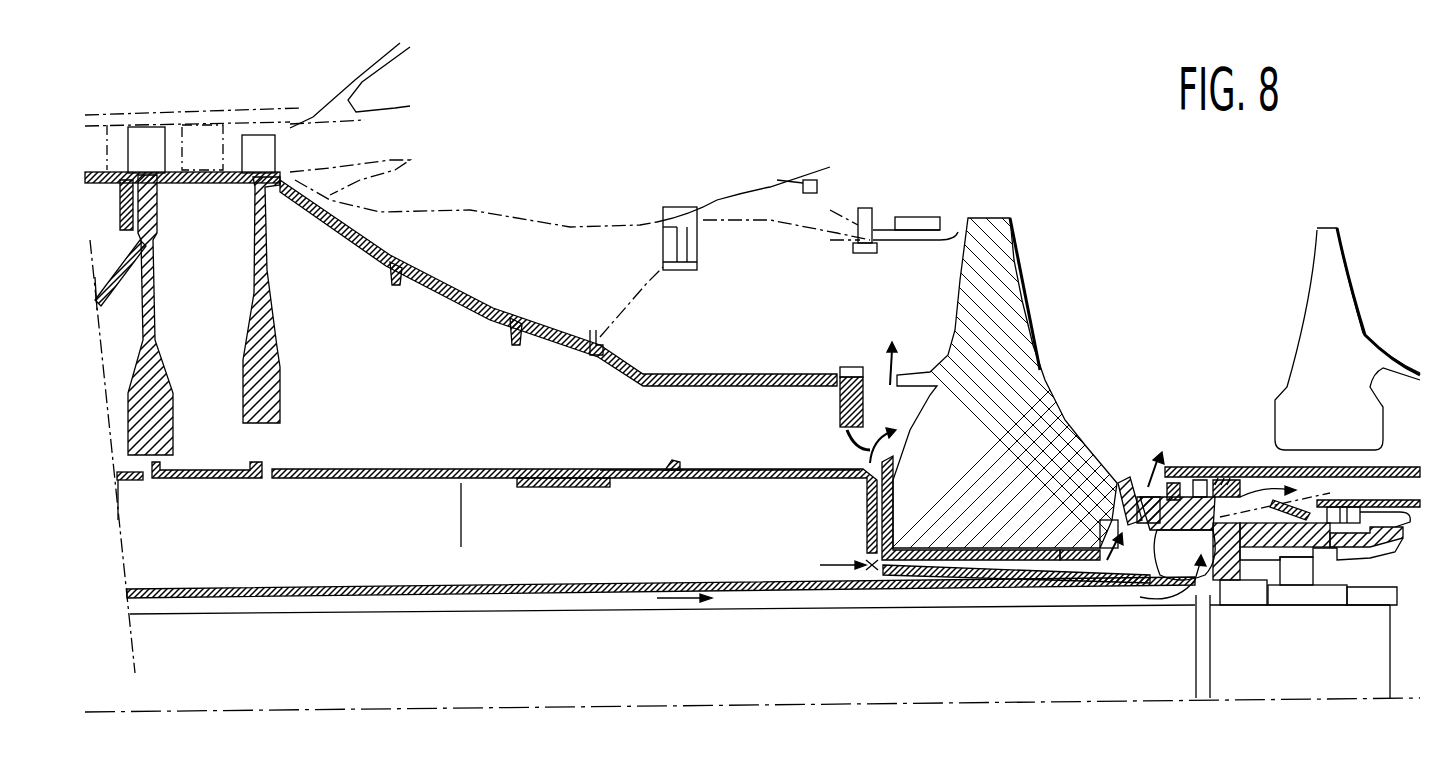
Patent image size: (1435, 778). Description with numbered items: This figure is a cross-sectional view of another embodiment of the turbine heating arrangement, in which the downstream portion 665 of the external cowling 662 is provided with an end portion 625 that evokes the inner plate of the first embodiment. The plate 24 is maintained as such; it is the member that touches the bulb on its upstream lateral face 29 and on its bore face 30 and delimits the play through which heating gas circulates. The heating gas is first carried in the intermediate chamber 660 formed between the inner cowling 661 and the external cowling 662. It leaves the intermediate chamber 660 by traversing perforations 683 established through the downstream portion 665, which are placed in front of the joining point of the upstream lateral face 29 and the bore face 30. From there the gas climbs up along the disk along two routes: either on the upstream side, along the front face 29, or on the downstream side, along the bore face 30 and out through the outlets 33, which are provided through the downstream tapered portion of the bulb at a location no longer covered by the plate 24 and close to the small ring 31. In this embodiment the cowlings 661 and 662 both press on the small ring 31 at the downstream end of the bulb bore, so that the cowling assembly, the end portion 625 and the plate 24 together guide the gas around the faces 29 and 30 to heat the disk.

The plate 24 is at (893, 485).
The upstream lateral face 29 is at (965, 545).
The bore face 30 is at (1040, 497).
The small ring 31 is at (1158, 503).
The orifices 33 is at (1120, 487).
The end portion 625 is at (870, 530).
The intermediate chamber 660 is at (368, 513).
The cowling 661 is at (430, 560).
The external cowling 662 is at (430, 465).
The downstream portion 665 is at (765, 470).
The perforations 683 is at (878, 570).